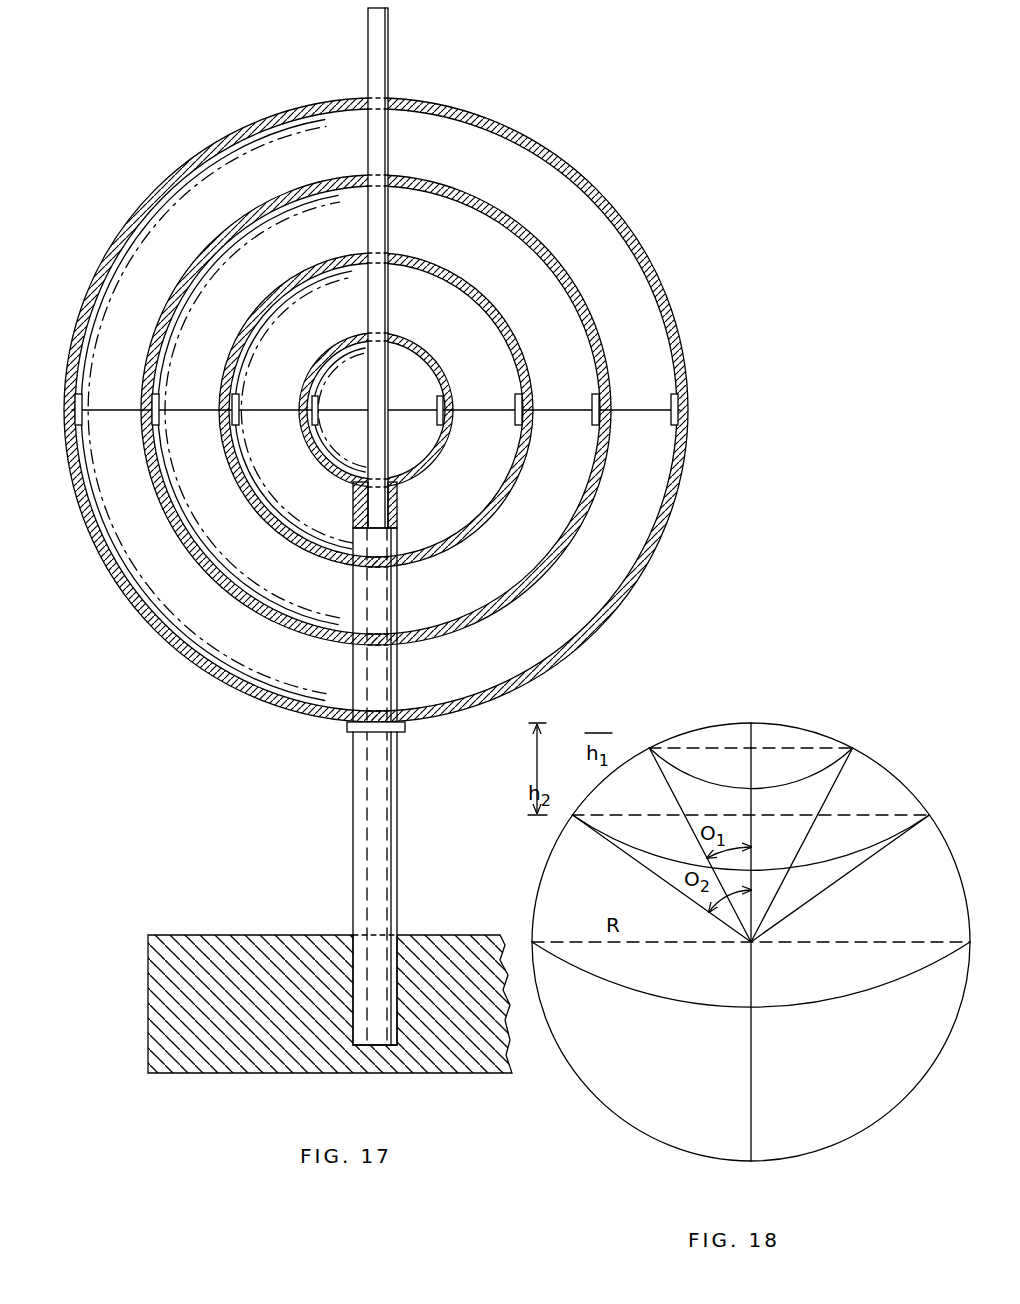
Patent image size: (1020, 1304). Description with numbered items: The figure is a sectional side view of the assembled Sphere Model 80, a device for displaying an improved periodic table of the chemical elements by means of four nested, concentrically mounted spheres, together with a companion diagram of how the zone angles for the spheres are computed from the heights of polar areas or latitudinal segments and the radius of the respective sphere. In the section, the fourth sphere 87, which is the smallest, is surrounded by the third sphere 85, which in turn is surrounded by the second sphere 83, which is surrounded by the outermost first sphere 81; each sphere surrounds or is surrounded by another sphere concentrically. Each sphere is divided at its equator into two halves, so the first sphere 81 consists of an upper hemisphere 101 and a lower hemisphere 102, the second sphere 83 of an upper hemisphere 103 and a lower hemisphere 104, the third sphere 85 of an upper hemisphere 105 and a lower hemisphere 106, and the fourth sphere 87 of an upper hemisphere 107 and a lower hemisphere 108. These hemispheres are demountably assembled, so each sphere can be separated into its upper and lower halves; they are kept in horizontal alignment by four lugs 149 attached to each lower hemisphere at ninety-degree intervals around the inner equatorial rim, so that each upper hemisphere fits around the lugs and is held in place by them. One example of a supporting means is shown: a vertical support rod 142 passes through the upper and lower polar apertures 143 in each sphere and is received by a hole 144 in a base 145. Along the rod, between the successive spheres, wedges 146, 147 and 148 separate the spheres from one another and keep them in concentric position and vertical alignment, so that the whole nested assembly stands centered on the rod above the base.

The Sphere Model 80 is at (350, 733).
The first sphere 81 is at (582, 182).
The second sphere 83 is at (568, 280).
The third sphere 85 is at (522, 356).
The fourth sphere 87 is at (428, 352).
The upper hemisphere 101 is at (226, 150).
The lower hemisphere 102 is at (184, 632).
The upper hemisphere 103 is at (262, 212).
The lower hemisphere 104 is at (258, 600).
The upper hemisphere 105 is at (298, 290).
The lower hemisphere 106 is at (268, 515).
The upper hemisphere 107 is at (333, 351).
The lower hemisphere 108 is at (306, 445).
The support rod 142 is at (368, 52).
The polar apertures 143 is at (389, 100).
The hole 144 is at (395, 935).
The base 145 is at (242, 950).
The wedge 146 is at (353, 680).
The wedge 147 is at (353, 593).
The wedge 148 is at (353, 535).
The lugs 149 is at (82, 400).